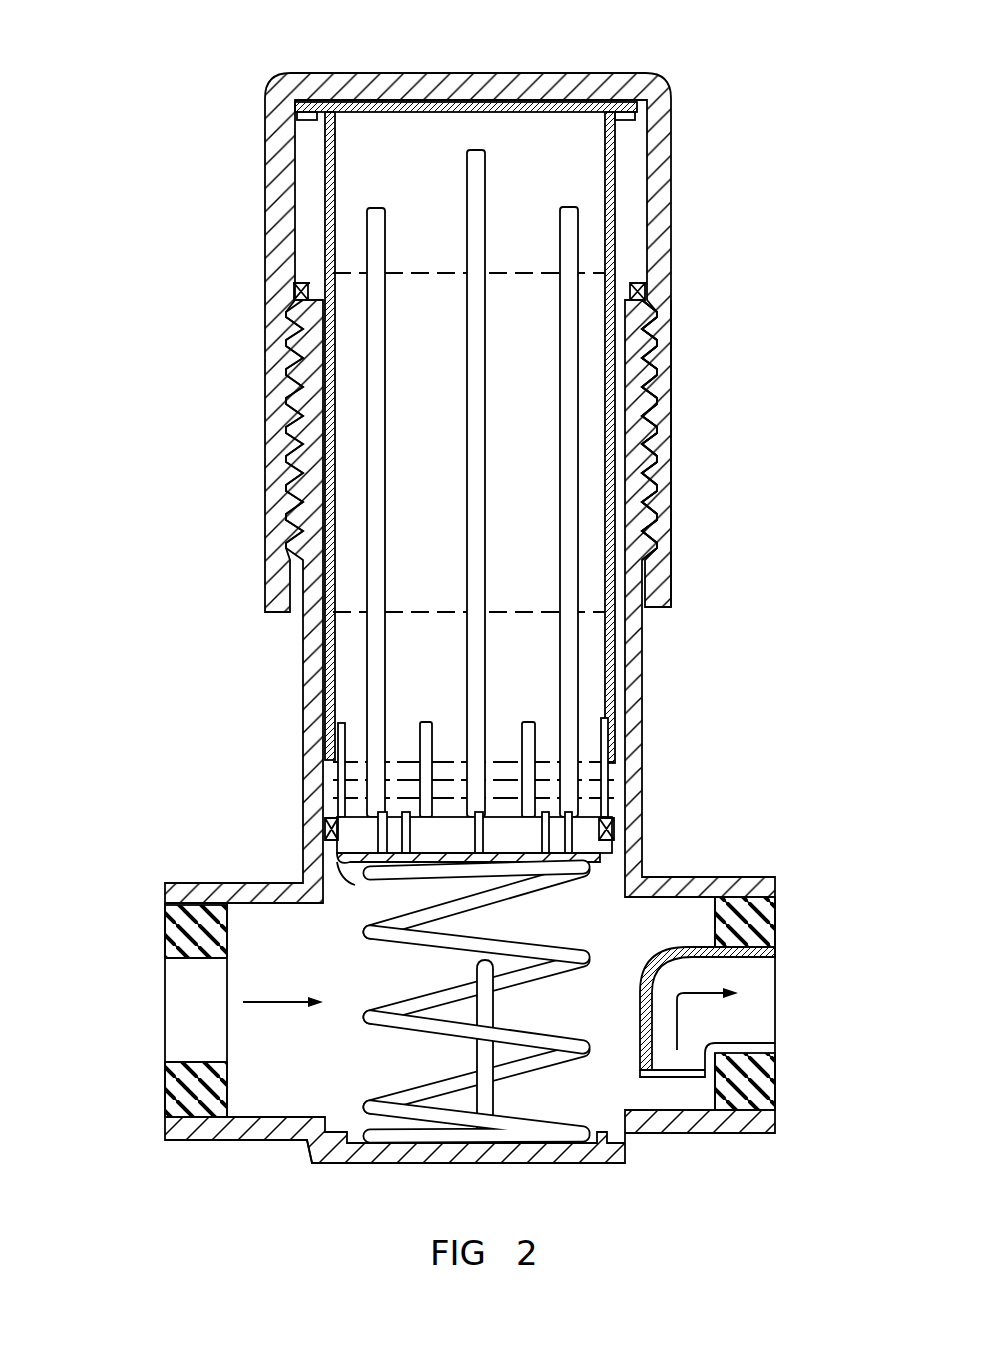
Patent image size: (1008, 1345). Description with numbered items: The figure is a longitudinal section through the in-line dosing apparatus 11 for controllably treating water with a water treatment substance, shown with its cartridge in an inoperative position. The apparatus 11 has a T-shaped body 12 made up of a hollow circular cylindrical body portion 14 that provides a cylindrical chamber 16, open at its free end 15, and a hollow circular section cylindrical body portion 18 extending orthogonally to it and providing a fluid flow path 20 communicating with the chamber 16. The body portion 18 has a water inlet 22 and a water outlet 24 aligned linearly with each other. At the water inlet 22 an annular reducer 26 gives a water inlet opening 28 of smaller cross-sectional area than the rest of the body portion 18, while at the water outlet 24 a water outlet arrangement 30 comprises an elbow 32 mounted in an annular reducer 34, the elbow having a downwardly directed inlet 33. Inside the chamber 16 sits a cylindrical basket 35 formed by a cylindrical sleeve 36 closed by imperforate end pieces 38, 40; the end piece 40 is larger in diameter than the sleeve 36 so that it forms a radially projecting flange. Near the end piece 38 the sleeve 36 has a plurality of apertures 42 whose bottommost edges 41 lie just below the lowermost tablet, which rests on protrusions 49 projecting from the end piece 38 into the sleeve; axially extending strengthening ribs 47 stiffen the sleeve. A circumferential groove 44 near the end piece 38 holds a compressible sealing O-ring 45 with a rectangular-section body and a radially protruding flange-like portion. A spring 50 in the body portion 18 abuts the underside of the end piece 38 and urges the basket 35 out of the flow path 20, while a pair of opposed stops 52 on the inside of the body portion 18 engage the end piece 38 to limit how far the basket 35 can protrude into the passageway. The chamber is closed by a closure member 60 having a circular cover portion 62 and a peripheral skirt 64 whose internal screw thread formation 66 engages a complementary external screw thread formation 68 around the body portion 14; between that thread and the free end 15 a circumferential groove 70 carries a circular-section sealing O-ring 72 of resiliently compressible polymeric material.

The apparatus 11 is at (750, 470).
The T-shaped body 12 is at (668, 809).
The hollow circular cylindrical body portion 14 is at (628, 712).
The free end 15 is at (630, 275).
The cylindrical chamber 16 is at (632, 769).
The hollow circular section cylindrical body portion 18 is at (270, 1125).
The fluid flow path 20 is at (288, 1000).
The water inlet 22 is at (150, 1102).
The water outlet 24 is at (790, 1112).
The annular reducer 26 is at (185, 922).
The water inlet opening 28 is at (150, 1008).
The water outlet arrangement 30 is at (800, 932).
The elbow 32 is at (680, 945).
The downwardly directed inlet 33 is at (686, 1092).
The annular reducer 34 is at (765, 1090).
The basket 35 is at (350, 681).
The cylindrical sleeve 36 is at (625, 668).
The end piece 38 is at (352, 868).
The end piece 40 is at (525, 101).
The bottommost edges 41 is at (447, 807).
The apertures 42 is at (322, 814).
The circumferential groove 44 is at (598, 860).
The sealing O-ring 45 is at (628, 832).
The strengthening ribs 47 is at (478, 492).
The protrusions 49 is at (482, 826).
The spring 50 is at (479, 1039).
The stops 52 is at (495, 1010).
The closure member 60 is at (740, 148).
The circular cover portion 62 is at (480, 86).
The peripheral skirt 64 is at (663, 383).
The internal screw thread formation 66 is at (652, 432).
The external screw thread formation 68 is at (640, 478).
The circumferential groove 70 is at (633, 291).
The sealing O-ring 72 is at (647, 291).